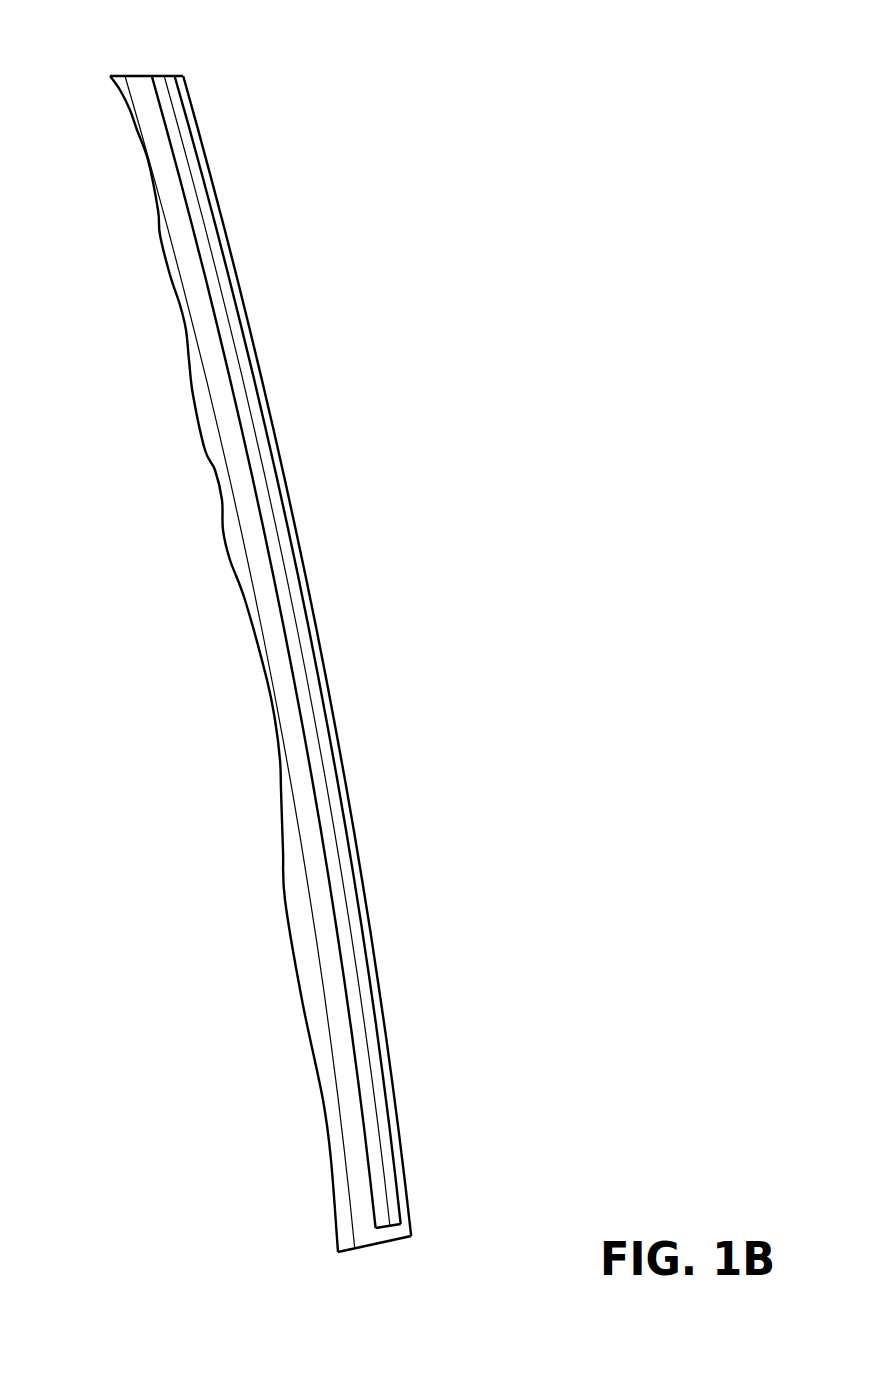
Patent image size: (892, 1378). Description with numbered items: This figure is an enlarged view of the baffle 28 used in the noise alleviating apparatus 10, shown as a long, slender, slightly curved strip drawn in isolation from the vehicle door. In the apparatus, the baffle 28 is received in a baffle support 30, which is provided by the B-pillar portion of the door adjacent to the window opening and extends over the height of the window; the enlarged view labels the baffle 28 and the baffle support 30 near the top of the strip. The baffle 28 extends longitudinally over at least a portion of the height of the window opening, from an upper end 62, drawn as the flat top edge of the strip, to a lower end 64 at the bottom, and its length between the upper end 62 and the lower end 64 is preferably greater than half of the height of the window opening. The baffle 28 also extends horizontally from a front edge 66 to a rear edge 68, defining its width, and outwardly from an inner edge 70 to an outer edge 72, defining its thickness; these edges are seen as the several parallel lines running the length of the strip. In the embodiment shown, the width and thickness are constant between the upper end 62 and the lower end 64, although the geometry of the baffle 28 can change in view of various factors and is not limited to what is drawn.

The noise alleviating apparatus 10 is at (279, 131).
The baffle 28 is at (225, 223).
The baffle support 30 is at (170, 194).
The upper end 62 is at (157, 85).
The lower end 64 is at (387, 1235).
The front edge 66 is at (250, 345).
The rear edge 68 is at (233, 362).
The inner edge 70 is at (268, 553).
The outer edge 72 is at (283, 543).